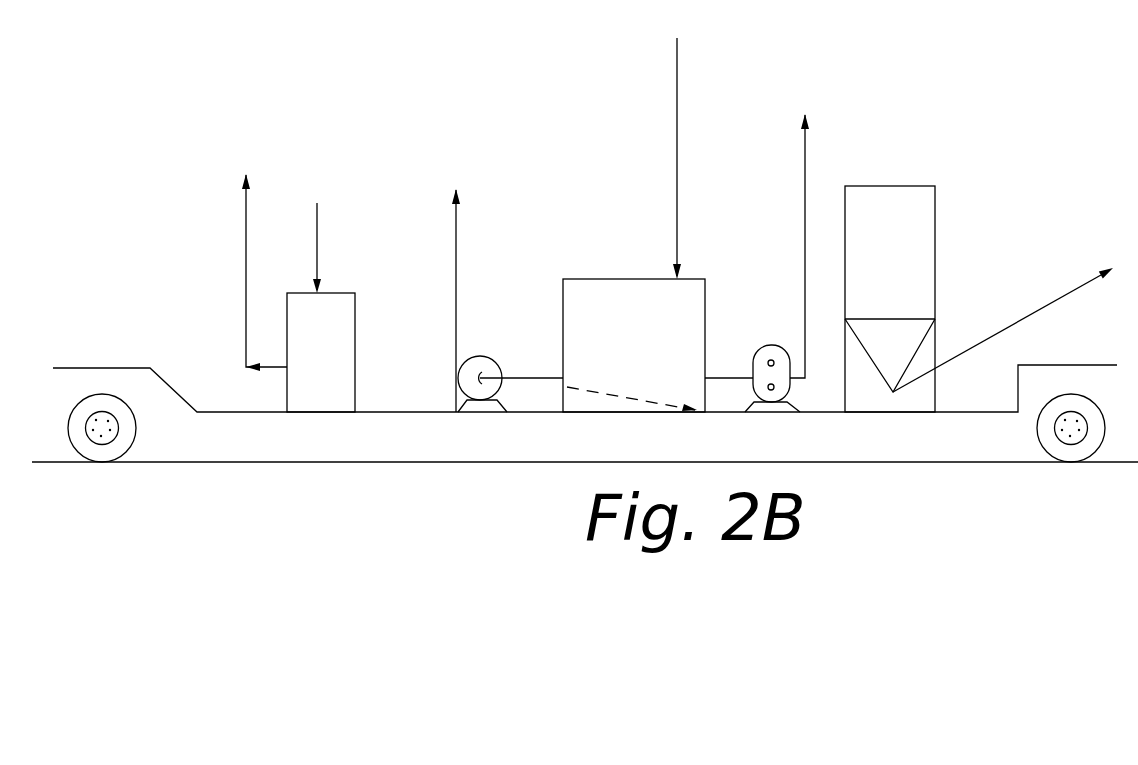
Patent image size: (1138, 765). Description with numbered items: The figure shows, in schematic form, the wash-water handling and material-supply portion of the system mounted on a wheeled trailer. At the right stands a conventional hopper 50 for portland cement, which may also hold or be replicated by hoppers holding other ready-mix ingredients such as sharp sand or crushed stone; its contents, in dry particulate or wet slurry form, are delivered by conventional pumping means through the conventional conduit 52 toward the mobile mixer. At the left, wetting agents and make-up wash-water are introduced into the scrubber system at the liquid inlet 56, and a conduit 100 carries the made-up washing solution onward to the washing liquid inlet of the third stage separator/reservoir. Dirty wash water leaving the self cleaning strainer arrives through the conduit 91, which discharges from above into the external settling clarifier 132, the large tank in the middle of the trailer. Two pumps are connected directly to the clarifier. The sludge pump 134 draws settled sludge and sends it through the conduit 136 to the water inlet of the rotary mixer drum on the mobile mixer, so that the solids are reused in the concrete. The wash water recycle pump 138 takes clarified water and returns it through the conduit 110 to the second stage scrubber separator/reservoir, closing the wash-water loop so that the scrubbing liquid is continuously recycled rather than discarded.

The hopper 50 is at (944, 231).
The conduit 52 is at (1058, 299).
The liquid inlet 56 is at (318, 258).
The conduit 91 is at (678, 79).
The conduit 100 is at (244, 206).
The conduit 110 is at (457, 236).
The external settling clarifier 132 is at (617, 275).
The sludge pump 134 is at (773, 342).
The conduit 136 is at (805, 178).
The wash water recycle pump 138 is at (496, 352).